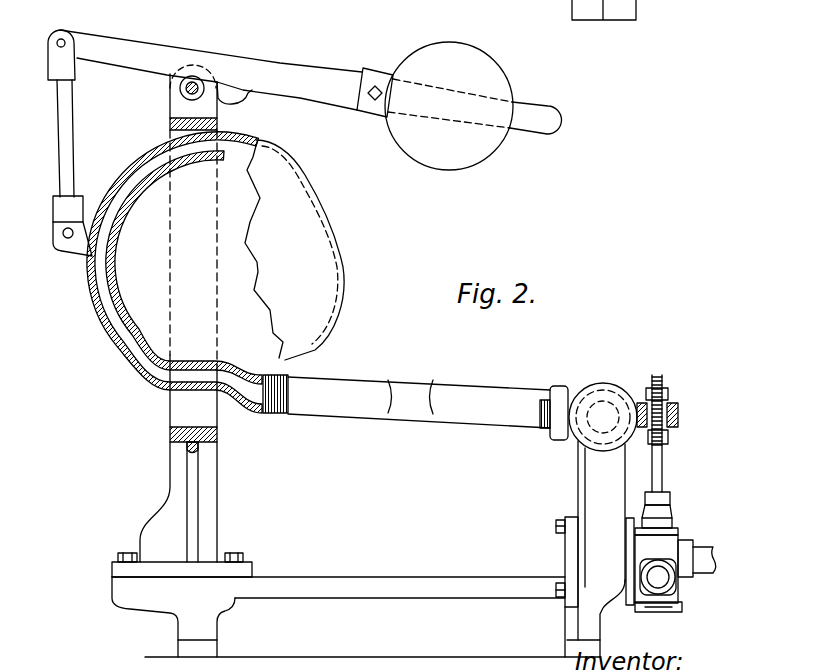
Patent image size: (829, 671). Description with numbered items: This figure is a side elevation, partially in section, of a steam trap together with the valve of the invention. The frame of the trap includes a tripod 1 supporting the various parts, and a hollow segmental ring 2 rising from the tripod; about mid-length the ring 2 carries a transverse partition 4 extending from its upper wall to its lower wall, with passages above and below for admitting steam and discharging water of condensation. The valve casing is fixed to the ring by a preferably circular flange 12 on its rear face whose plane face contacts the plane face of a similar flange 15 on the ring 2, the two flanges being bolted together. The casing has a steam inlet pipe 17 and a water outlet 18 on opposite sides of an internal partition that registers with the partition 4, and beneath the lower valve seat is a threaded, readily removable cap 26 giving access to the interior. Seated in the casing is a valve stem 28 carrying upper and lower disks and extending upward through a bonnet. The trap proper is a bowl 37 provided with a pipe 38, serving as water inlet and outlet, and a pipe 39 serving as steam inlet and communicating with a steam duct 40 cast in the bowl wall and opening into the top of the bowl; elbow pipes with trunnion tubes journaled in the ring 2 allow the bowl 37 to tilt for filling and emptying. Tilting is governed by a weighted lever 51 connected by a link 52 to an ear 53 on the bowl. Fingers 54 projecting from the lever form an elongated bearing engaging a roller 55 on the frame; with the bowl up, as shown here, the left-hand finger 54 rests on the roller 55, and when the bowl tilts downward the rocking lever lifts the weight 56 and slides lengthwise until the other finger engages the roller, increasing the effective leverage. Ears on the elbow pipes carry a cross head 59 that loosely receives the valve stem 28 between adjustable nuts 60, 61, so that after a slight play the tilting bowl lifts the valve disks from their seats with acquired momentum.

The tripod 1 is at (400, 585).
The segmental ring 2 is at (577, 489).
The transverse partition 4 is at (603, 20).
The circular flange 12 is at (628, 605).
The flange 15 is at (623, 607).
The steam inlet pipe 17 is at (710, 558).
The water outlet 18 is at (678, 585).
The cap 26 is at (680, 608).
The valve stem 28 is at (663, 472).
The bowl 37 is at (222, 265).
The water inlet pipe 38 is at (407, 390).
The steam inlet pipe 39 is at (358, 408).
The steam duct 40 is at (147, 348).
The weighted lever 51 is at (310, 75).
The link 52 is at (67, 140).
The ear 53 is at (93, 212).
The fingers 54 is at (173, 90).
The roller 55 is at (197, 80).
The weight 56 is at (468, 50).
The cross head 59 is at (682, 413).
The adjustable nut 60 is at (665, 397).
The adjustable nut 61 is at (668, 437).